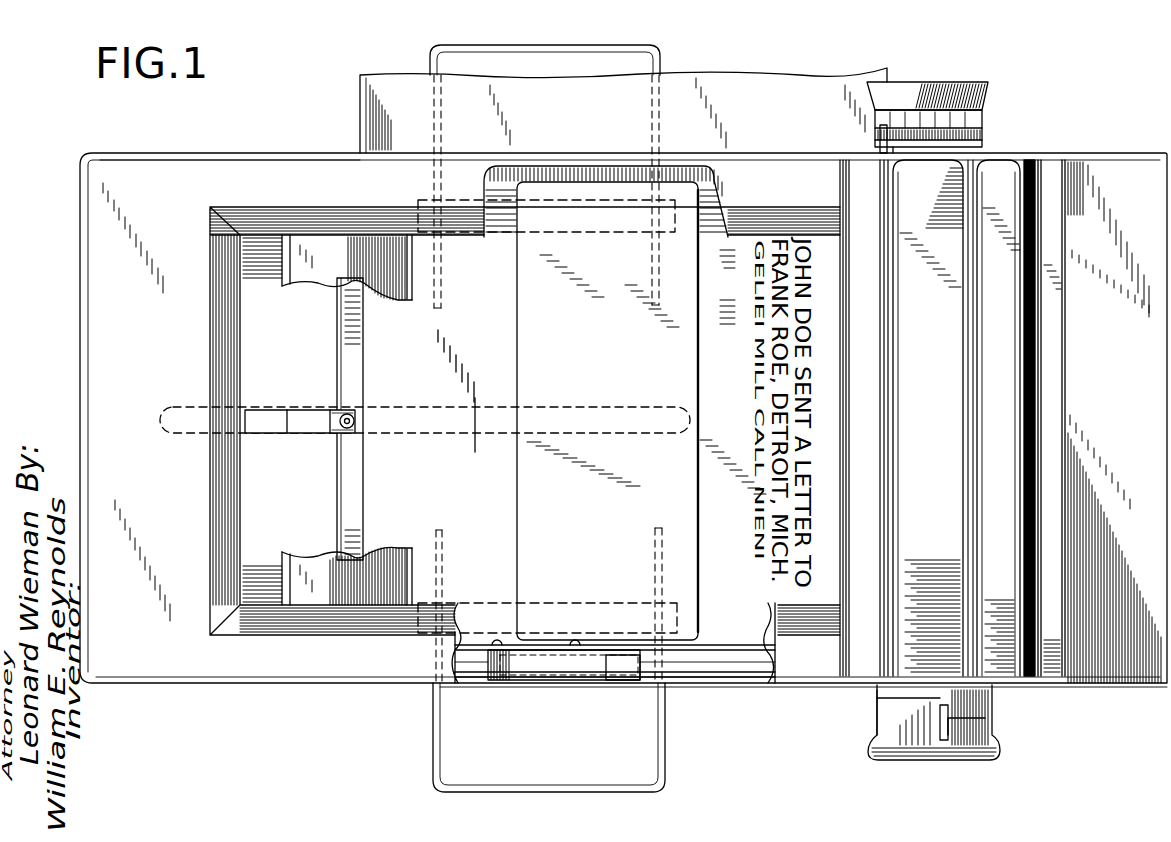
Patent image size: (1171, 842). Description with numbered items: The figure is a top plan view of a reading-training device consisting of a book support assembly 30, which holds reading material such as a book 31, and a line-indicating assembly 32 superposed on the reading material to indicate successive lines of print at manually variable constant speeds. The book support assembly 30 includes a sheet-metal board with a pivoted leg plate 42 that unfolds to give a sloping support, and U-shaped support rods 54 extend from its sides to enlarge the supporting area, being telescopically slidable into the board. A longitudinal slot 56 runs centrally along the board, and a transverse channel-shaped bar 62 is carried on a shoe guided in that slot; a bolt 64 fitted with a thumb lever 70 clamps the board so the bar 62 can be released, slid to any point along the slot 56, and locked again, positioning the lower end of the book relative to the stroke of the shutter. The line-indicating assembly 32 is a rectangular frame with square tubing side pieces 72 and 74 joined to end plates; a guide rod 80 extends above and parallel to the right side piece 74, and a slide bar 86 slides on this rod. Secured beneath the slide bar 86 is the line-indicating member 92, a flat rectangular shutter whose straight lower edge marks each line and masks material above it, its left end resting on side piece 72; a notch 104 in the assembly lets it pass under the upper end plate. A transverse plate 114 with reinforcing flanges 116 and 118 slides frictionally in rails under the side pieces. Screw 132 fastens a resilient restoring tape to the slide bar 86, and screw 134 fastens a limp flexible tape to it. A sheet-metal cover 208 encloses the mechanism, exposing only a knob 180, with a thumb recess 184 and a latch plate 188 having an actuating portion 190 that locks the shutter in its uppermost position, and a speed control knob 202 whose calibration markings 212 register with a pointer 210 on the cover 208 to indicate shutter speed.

The book support assembly 30 is at (1052, 152).
The book 31 is at (372, 80).
The line-indicating assembly 32 is at (76, 215).
The leg plate 42 is at (1136, 667).
The U-shaped support rods 54 is at (656, 47).
The slot 56 is at (260, 409).
The transverse channel-shaped bar 62 is at (345, 316).
The bolt 64 is at (353, 416).
The thumb lever 70 is at (305, 432).
The left side piece 72 is at (545, 166).
The right side piece 74 is at (700, 684).
The guide rod 80 is at (757, 673).
The slide bar 86 is at (557, 680).
The line-indicating member 92 is at (612, 335).
The notch 104 is at (608, 650).
The transverse plate 114 is at (392, 301).
The reinforcing flange 116 is at (290, 553).
The reinforcing flange 118 is at (410, 288).
The screw 132 is at (496, 644).
The screw 134 is at (575, 644).
The knob 180 is at (996, 737).
The recess 184 is at (886, 717).
The latch plate 188 is at (982, 707).
The actuating portion 190 is at (942, 728).
The speed control knob 202 is at (963, 82).
The cover 208 is at (173, 177).
The pointer 210 is at (878, 131).
The calibration markings 212 is at (985, 131).